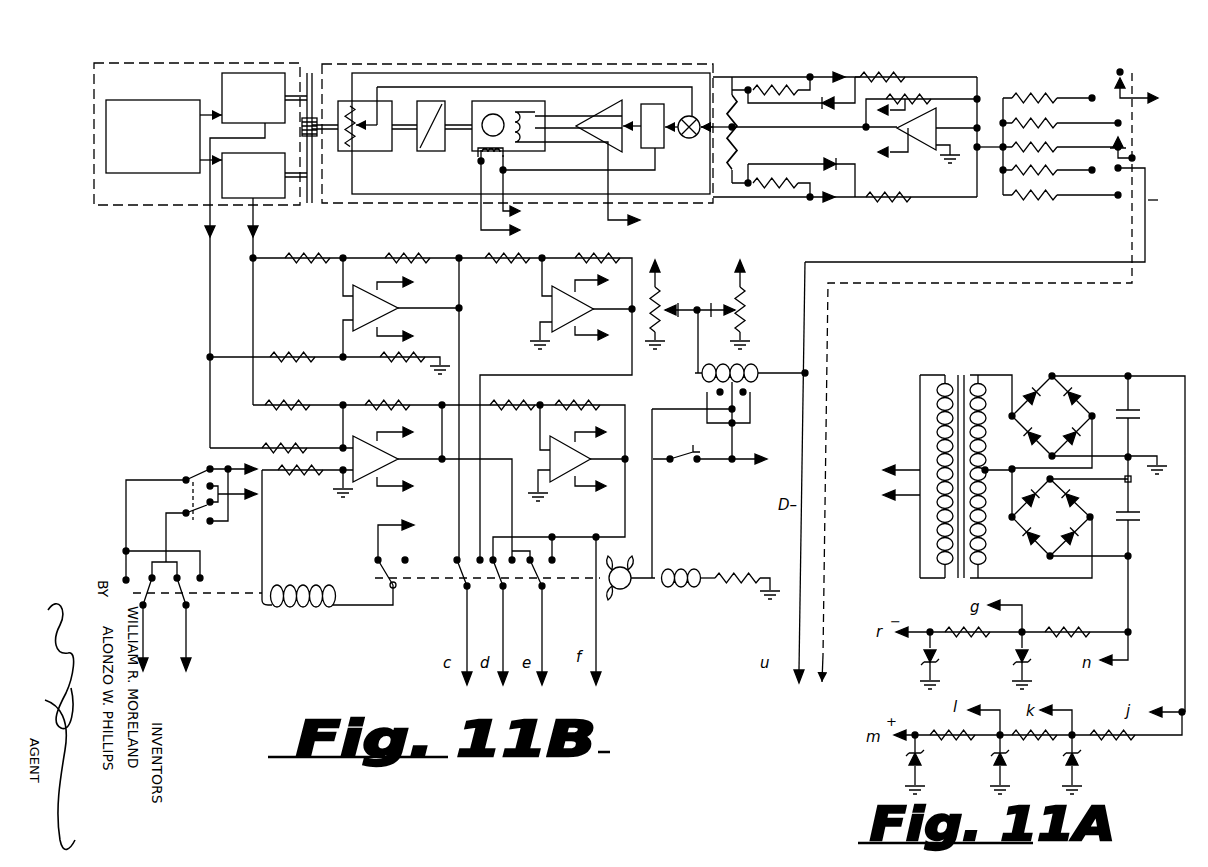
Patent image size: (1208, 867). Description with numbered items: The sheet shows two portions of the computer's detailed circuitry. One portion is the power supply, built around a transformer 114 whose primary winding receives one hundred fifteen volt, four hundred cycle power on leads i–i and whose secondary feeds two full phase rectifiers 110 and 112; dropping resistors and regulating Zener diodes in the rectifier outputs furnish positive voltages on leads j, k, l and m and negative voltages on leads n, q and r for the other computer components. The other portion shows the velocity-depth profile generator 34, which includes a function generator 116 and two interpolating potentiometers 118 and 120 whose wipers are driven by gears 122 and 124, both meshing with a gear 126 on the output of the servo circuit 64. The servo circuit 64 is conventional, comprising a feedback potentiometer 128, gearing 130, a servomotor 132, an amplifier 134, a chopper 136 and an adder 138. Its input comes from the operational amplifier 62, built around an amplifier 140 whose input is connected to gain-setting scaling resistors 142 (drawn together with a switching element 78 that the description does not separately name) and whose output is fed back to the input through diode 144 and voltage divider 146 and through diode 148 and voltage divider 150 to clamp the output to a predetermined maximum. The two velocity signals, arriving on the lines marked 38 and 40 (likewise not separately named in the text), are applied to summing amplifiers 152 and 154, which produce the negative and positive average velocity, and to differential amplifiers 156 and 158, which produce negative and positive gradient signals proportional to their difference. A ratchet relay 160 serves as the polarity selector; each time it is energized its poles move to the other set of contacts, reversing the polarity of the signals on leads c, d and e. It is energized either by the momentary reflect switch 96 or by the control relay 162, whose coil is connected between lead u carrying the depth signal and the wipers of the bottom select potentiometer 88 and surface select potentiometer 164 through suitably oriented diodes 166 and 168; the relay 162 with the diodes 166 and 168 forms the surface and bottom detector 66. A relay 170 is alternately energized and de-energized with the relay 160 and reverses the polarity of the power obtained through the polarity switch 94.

In FIG. 11B, the velocity-depth profile generator 34 is at (94, 126).
In FIG. 11B, the function generator 116 is at (153, 136).
In FIG. 11B, the interpolating potentiometer 118 is at (253, 98).
In FIG. 11B, the interpolating potentiometer 120 is at (253, 175).
In FIG. 11B, the gear 122 is at (312, 73).
In FIG. 11B, the gear 124 is at (309, 205).
In FIG. 11B, the gear 126 is at (317, 135).
In FIG. 11B, the servo circuit 64 is at (500, 67).
In FIG. 11B, the feedback potentiometer 128 is at (370, 152).
In FIG. 11B, the gearing 130 is at (425, 152).
In FIG. 11B, the servomotor 132 is at (528, 152).
In FIG. 11B, the amplifier 134 is at (599, 126).
In FIG. 11B, the chopper 136 is at (652, 150).
In FIG. 11B, the adder 138 is at (690, 140).
In FIG. 11B, the voltage divider 146 is at (733, 95).
In FIG. 11B, the diode 144 is at (818, 104).
In FIG. 11B, the diode 148 is at (824, 160).
In FIG. 11B, the voltage divider 150 is at (740, 178).
In FIG. 11B, the amplifier 140 is at (854, 129).
In FIG. 11B, the operational amplifier 62 is at (954, 157).
In FIG. 11B, the scaling resistors 142 is at (1032, 168).
In FIG. 11B, the selector switch 78 is at (1127, 215).
In FIG. 11B, the signal line V1 38 is at (205, 296).
In FIG. 11B, the signal line V2 40 is at (253, 285).
In FIG. 11B, the differential amplifier 156 is at (419, 313).
In FIG. 11B, the differential amplifier 158 is at (557, 409).
In FIG. 11B, the summing amplifier 152 is at (417, 480).
In FIG. 11B, the summing amplifier 154 is at (572, 545).
In FIG. 11B, the reflect switch 96 is at (690, 465).
In FIG. 11B, the ratchet relay 160 is at (633, 585).
In FIG. 11B, the control relay 162 is at (755, 382).
In FIG. 11B, the surface and bottom detector 66 is at (745, 366).
In FIG. 11B, the potentiometer 88 is at (664, 310).
In FIG. 11B, the diode 166 is at (678, 322).
In FIG. 11B, the diode 168 is at (713, 304).
In FIG. 11B, the potentiometer 164 is at (750, 300).
In FIG. 11B, the polarity switch 94 is at (183, 472).
In FIG. 11B, the relay 170 is at (222, 596).
In FIG. 11A, the transformer 114 is at (962, 378).
In FIG. 11A, the full phase rectifier 110 is at (1097, 542).
In FIG. 11A, the full phase rectifier 112 is at (1070, 517).